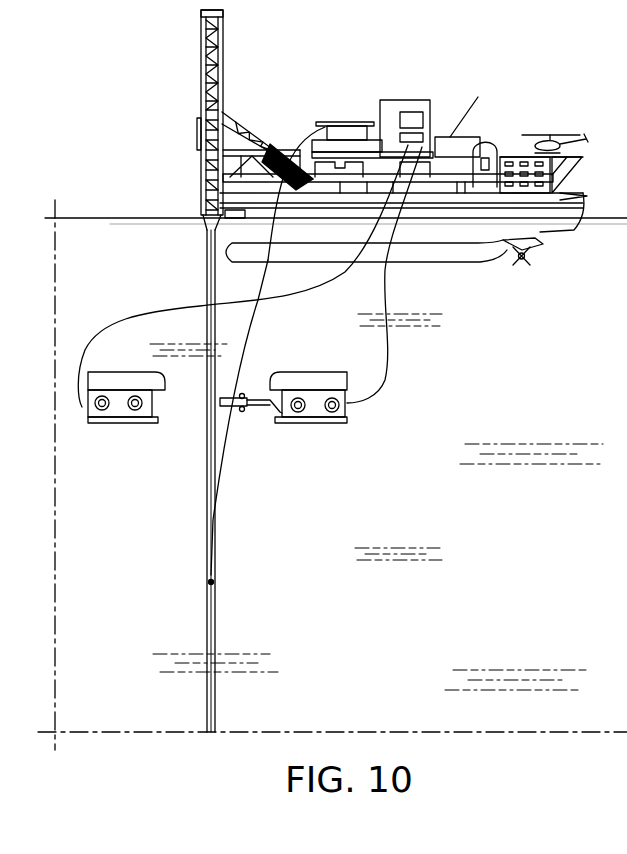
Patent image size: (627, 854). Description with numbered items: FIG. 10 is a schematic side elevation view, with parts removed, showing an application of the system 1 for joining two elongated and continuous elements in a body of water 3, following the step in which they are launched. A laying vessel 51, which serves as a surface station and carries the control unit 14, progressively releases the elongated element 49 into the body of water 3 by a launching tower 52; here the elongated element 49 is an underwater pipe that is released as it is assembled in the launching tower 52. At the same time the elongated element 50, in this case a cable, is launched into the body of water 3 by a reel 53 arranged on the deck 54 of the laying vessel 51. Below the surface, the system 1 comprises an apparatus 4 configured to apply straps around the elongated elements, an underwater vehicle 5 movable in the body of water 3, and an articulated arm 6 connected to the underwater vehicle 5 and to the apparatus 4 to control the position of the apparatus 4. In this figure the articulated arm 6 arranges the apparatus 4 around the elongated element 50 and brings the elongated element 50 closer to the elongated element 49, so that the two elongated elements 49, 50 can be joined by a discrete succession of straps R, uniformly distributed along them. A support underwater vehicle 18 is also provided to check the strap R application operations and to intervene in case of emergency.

The system 1 is at (96, 142).
The body of water 3 is at (579, 340).
The apparatus 4 is at (219, 413).
The underwater vehicle 5 is at (312, 445).
The articulated arm 6 is at (262, 425).
The control unit 14 is at (413, 118).
The support underwater vehicle 18 is at (122, 408).
The elongated element 49 is at (207, 258).
The elongated element 50 is at (253, 342).
The laying vessel 51 is at (468, 210).
The launching tower 52 is at (201, 58).
The reel 53 is at (347, 125).
The deck 54 is at (283, 128).
The strap R is at (208, 582).